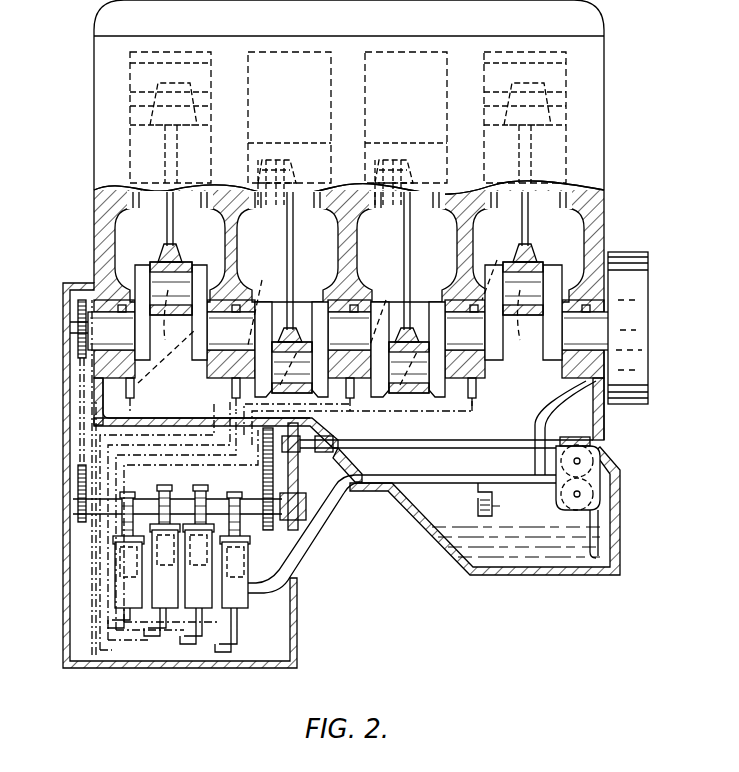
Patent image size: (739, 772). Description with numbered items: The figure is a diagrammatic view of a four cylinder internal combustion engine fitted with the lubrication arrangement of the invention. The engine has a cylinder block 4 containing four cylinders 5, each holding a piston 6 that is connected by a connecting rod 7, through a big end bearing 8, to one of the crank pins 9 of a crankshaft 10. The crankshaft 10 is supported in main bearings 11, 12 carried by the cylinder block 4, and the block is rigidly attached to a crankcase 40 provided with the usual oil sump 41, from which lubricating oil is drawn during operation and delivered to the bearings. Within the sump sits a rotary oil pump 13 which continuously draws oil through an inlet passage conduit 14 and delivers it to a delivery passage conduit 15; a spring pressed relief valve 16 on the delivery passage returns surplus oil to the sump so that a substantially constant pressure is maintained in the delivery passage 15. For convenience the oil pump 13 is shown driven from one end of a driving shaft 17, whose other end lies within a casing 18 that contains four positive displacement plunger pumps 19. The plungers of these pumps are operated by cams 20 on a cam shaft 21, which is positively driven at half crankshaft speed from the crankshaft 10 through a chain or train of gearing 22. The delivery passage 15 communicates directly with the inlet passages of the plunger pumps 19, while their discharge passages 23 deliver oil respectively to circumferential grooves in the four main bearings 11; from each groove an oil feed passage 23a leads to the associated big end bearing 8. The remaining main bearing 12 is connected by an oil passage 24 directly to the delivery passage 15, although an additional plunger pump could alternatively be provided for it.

The cylinder block 4 is at (94, 214).
The cylinders 5 is at (256, 74).
The piston 6 is at (140, 74).
The connecting rod 7 is at (174, 223).
The big end bearing 8 is at (158, 305).
The crank pins 9 is at (160, 272).
The crankshaft 10 is at (450, 300).
The main bearings 11 is at (98, 300).
The main bearing 12 is at (588, 318).
The rotary oil pump 13 is at (600, 470).
The inlet passage conduit 14 is at (599, 518).
The delivery passage conduit 15 is at (420, 483).
The spring pressed relief valve 16 is at (478, 500).
The driving shaft 17 is at (474, 440).
The casing 18 is at (63, 441).
The plunger pumps 19 is at (181, 566).
The cams 20 is at (138, 484).
The cam shaft 21 is at (118, 512).
The chain or train of gearing 22 is at (78, 410).
The discharge passages 23 is at (120, 652).
The oil feed passage 23a is at (329, 313).
The oil passage 24 is at (570, 400).
The crankcase 40 is at (600, 428).
The oil sump 41 is at (566, 578).